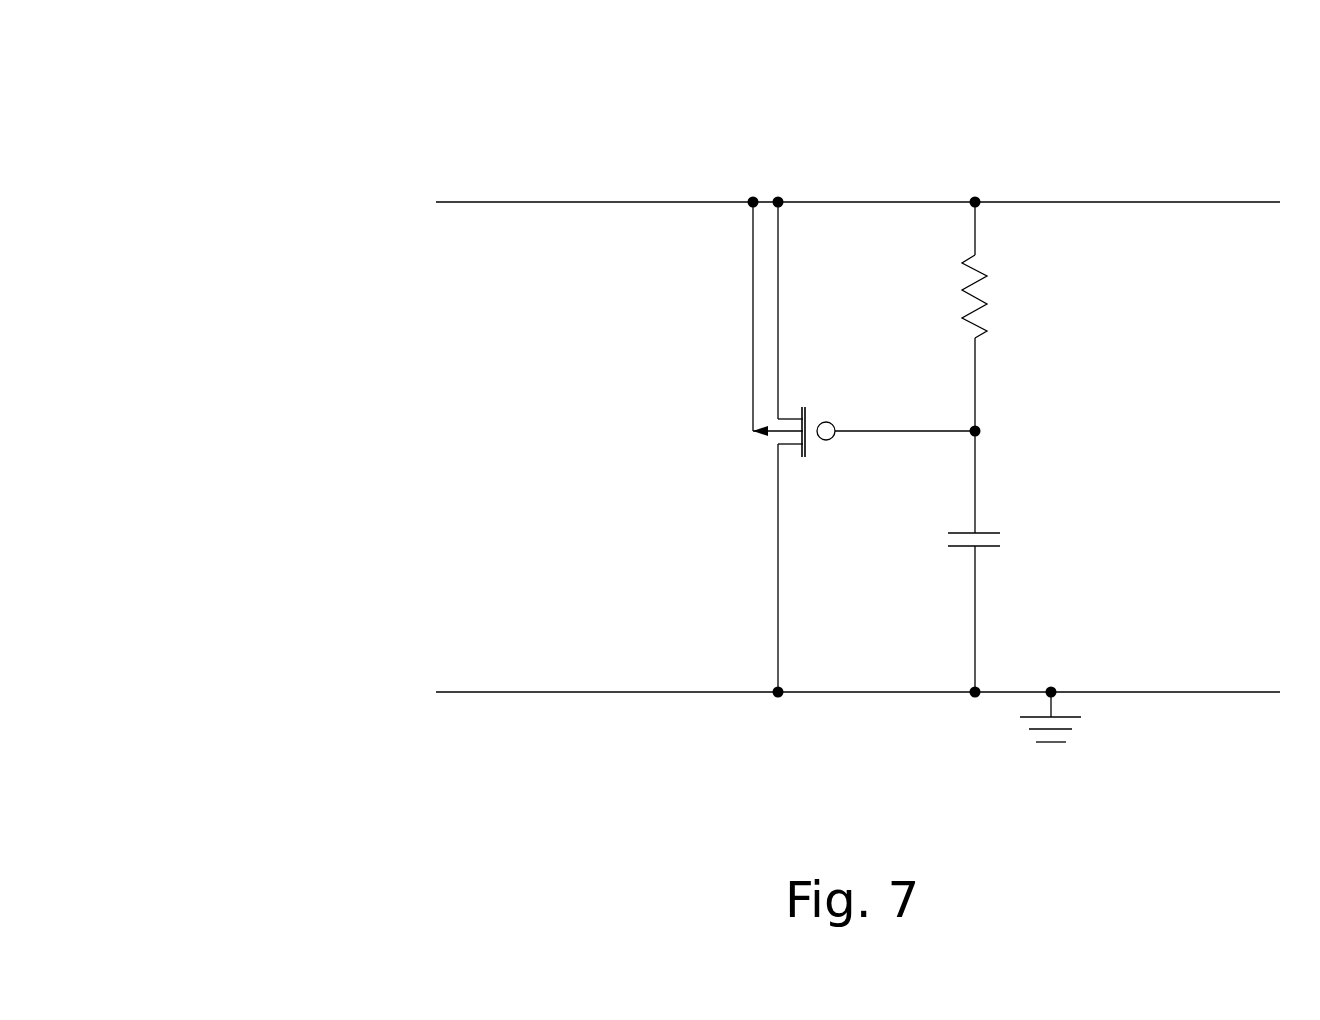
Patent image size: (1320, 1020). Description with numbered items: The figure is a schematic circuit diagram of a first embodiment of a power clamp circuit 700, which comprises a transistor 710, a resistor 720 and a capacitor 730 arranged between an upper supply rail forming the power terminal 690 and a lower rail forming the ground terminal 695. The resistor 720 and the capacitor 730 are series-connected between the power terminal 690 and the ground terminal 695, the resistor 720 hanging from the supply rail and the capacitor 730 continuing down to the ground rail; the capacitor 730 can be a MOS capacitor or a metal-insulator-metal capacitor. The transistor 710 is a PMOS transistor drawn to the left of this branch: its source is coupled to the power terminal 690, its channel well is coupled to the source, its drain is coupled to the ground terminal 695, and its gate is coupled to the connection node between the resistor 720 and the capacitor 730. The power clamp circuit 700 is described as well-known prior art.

The power clamp circuit 700 is at (303, 128).
The power terminal 690 is at (1196, 202).
The ground terminal 695 is at (1196, 692).
The transistor 710 is at (777, 440).
The resistor 720 is at (983, 330).
The capacitor 730 is at (988, 533).